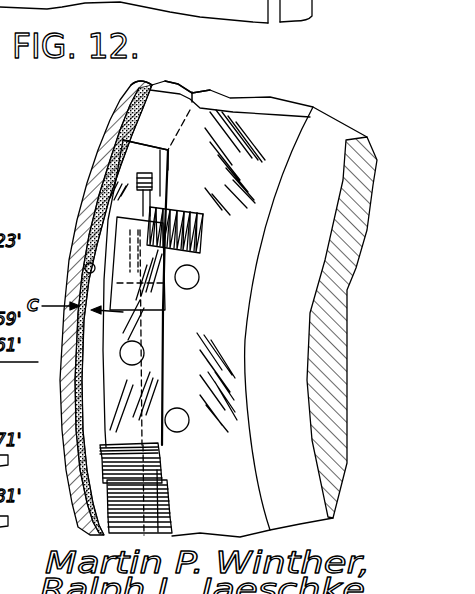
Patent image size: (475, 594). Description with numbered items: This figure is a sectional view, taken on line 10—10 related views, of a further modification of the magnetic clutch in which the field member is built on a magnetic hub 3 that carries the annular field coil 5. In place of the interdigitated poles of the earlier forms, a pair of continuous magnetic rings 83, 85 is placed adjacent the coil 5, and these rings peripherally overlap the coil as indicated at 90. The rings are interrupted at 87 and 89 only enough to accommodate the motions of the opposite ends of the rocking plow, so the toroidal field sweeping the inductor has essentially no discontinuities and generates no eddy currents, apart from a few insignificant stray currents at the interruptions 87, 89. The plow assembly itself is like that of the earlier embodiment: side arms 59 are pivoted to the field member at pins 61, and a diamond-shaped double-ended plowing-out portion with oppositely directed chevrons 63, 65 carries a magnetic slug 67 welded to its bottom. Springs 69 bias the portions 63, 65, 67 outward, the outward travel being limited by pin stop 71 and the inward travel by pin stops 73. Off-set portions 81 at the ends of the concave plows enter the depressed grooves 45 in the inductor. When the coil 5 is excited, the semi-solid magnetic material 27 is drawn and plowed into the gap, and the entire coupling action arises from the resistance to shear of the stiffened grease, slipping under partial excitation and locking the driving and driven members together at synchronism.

The hub 3 is at (345, 296).
The annular field coil 5 is at (263, 100).
The section line 10— 10 is at (22, 340).
The semi-solid magnetic material 27 is at (85, 268).
The depressed grooves 45 is at (91, 186).
The side arms 59 is at (164, 309).
The pins 61 is at (144, 350).
The chevron plowing-out portion 63 is at (120, 190).
The chevron plowing-out portion 65 is at (100, 250).
The magnetic slug 67 is at (153, 180).
The springs 69 is at (188, 207).
The pin stop 71 is at (186, 428).
The pin stops 73 is at (199, 277).
The off-set portions 81 is at (100, 458).
The continuous magnetic ring 83 is at (178, 86).
The continuous magnetic ring 85 is at (193, 90).
The interruption 87 is at (105, 147).
The interruption 89 is at (105, 498).
The peripheral overlap 90 is at (127, 89).